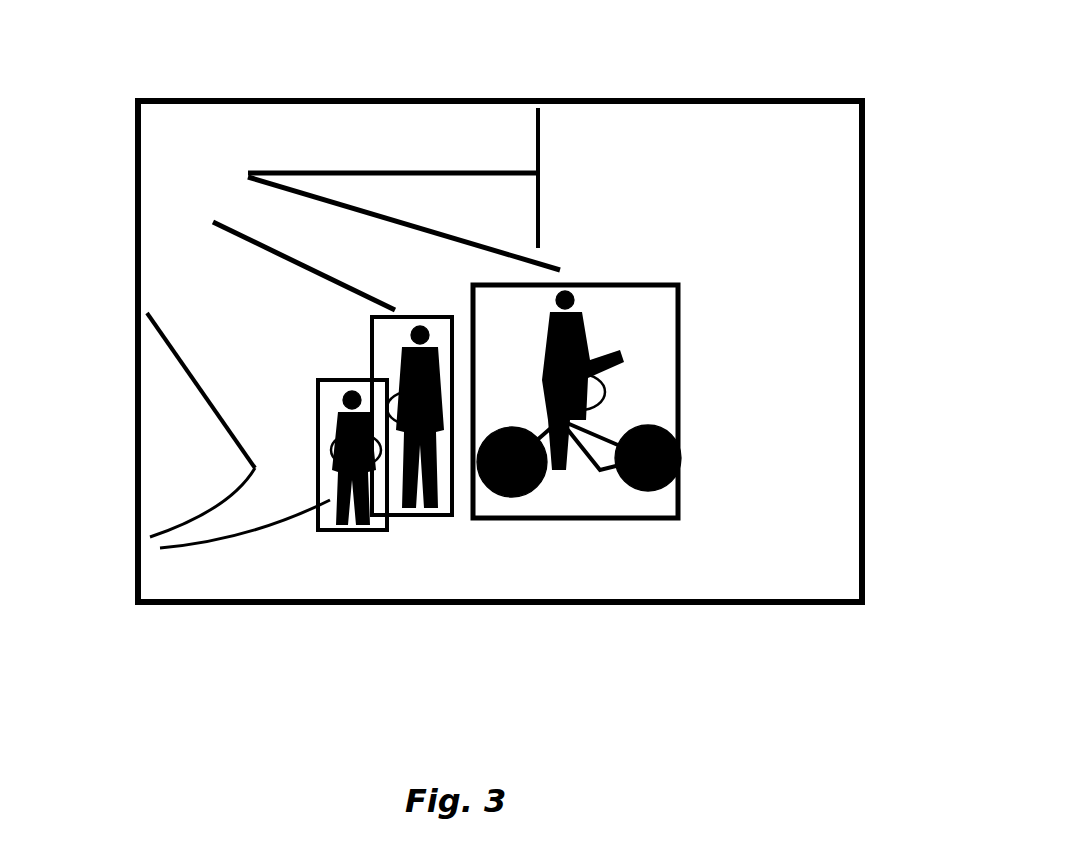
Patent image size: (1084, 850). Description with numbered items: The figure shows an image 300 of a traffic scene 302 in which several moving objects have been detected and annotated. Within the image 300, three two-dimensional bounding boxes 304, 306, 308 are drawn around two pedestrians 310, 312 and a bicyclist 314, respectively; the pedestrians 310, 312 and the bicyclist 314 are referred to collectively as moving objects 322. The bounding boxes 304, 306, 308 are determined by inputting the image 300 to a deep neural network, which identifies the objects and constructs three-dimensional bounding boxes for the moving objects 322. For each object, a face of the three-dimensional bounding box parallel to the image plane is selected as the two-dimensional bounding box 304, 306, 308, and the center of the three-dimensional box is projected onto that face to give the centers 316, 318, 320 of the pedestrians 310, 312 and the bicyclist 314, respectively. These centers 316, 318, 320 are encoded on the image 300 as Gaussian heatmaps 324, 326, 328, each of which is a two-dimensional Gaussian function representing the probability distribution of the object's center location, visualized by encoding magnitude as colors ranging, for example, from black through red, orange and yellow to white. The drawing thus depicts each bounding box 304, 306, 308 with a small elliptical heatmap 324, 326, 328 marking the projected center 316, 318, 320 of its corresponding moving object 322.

The image 300 is at (330, 97).
The traffic scene 302 is at (442, 118).
The two-dimensional bounding box 304 is at (352, 528).
The two-dimensional bounding box 306 is at (422, 517).
The two-dimensional bounding box 308 is at (530, 520).
The pedestrian 310 is at (342, 417).
The pedestrian 312 is at (400, 358).
The bicyclist 314 is at (607, 342).
The center 316 is at (348, 466).
The center 318 is at (417, 427).
The center 320 is at (587, 412).
The moving objects 322 is at (312, 249).
The Gaussian heatmap 324 is at (330, 457).
The Gaussian heatmap 326 is at (438, 423).
The Gaussian heatmap 328 is at (607, 397).